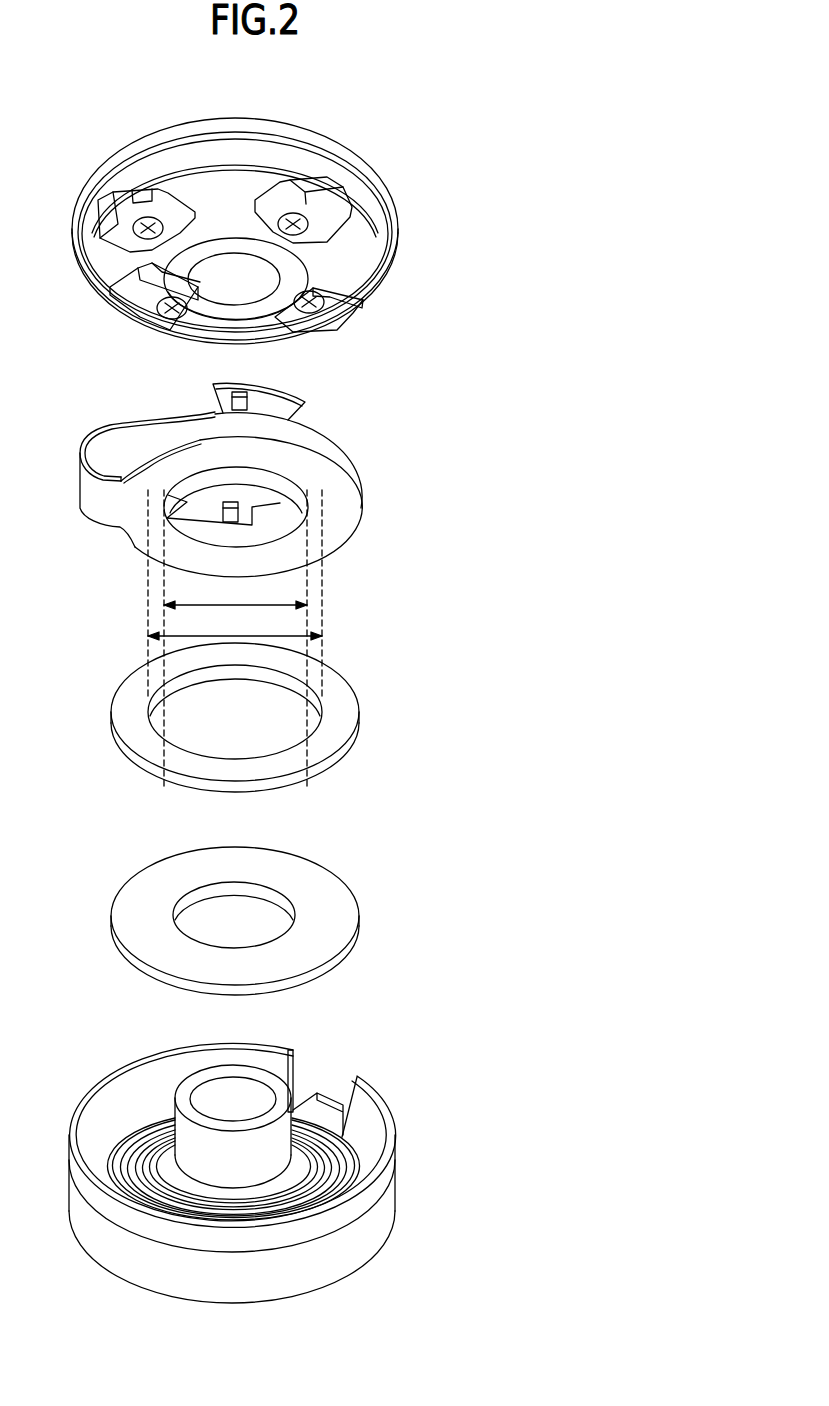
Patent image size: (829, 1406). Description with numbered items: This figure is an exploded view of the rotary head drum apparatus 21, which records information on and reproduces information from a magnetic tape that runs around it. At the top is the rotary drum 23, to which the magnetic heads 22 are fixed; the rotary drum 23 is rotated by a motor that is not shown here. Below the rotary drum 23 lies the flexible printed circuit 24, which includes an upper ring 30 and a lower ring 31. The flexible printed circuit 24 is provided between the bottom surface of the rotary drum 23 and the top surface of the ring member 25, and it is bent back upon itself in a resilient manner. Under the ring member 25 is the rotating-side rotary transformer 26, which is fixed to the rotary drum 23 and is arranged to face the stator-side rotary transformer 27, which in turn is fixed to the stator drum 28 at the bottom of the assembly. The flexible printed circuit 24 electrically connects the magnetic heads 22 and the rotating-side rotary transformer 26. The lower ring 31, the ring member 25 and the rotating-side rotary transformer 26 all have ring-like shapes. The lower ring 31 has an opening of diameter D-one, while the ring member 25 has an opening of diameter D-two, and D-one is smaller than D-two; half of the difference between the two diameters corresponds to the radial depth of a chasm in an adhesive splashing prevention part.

The rotary head drum apparatus 21 is at (403, 99).
The magnetic heads 22 is at (265, 231).
The rotary drum 23 is at (402, 152).
The flexible printed circuit 24 is at (270, 470).
The ring member 25 is at (340, 712).
The rotating-side rotary transformer 26 is at (338, 916).
The stator-side rotary transformer 27 is at (333, 1155).
The stator drum 28 is at (273, 1173).
The upper ring 30 is at (300, 400).
The lower ring 31 is at (352, 521).